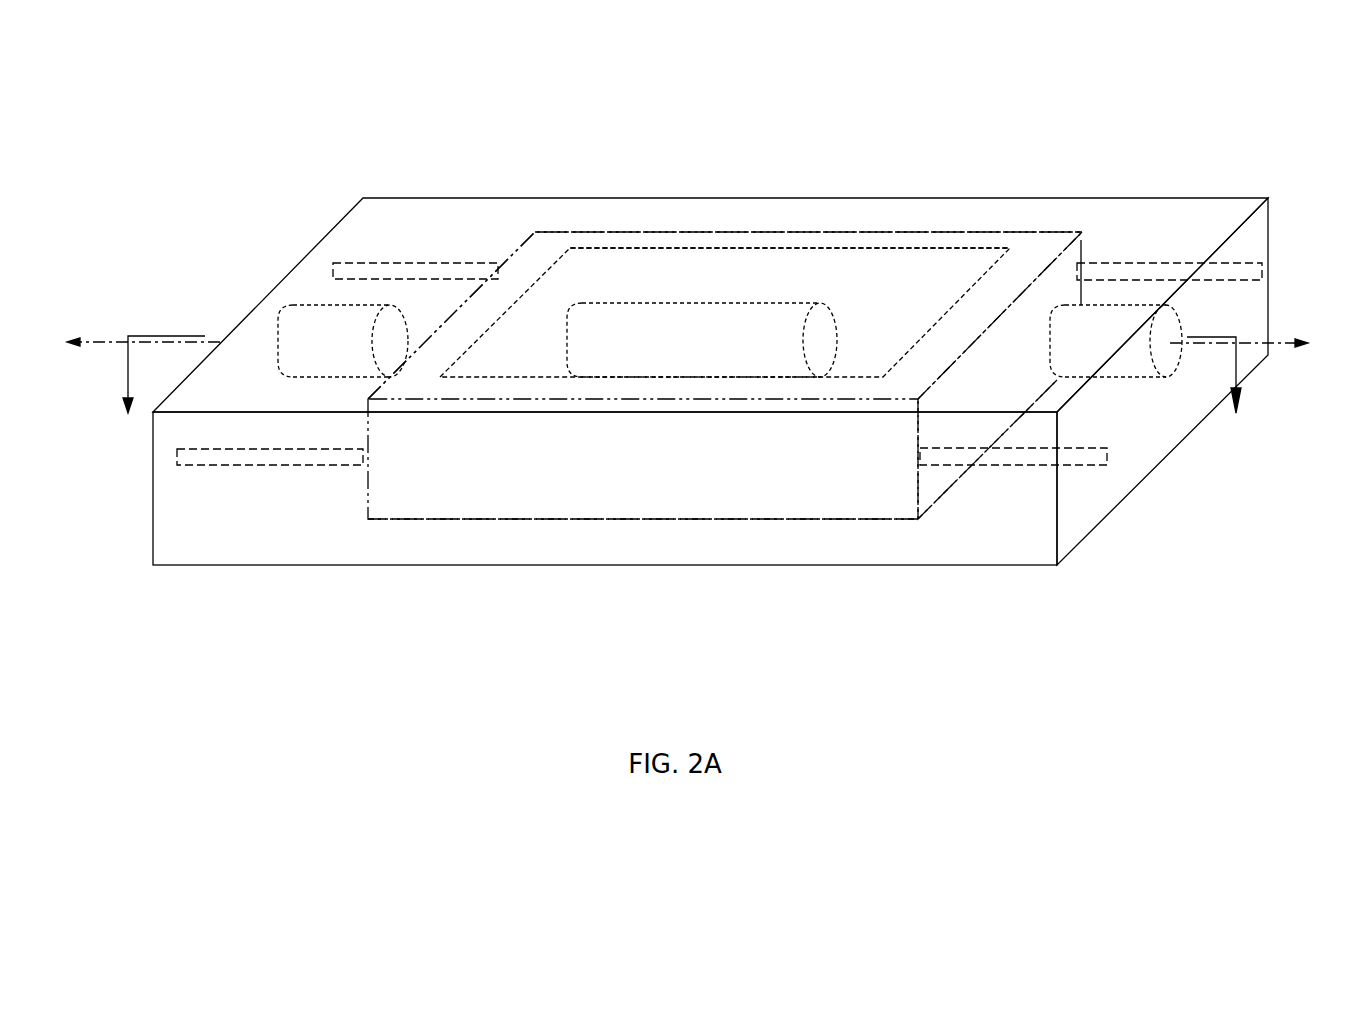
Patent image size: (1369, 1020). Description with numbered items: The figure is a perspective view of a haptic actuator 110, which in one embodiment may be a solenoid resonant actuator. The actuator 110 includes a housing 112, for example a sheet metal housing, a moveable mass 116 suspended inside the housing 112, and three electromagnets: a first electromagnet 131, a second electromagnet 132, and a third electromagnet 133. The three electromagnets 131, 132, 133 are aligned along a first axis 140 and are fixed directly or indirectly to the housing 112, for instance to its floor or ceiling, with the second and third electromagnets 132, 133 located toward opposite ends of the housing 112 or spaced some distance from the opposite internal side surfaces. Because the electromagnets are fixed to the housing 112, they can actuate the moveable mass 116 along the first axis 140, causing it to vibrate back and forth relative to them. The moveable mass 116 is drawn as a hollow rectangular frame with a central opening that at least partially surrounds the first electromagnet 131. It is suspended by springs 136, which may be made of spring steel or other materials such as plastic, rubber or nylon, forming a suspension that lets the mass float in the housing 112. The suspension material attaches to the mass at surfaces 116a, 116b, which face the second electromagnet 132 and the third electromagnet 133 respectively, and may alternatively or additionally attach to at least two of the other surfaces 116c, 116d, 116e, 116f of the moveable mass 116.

The haptic actuator 110 is at (300, 193).
The housing 112 is at (437, 215).
The moveable mass 116 is at (938, 237).
The surface of moveable mass 116a is at (503, 258).
The surface of moveable mass 116b is at (1058, 285).
The surface of moveable mass 116c is at (620, 233).
The surface of moveable mass 116d is at (550, 498).
The surface of moveable mass 116e is at (557, 245).
The surface of moveable mass 116f is at (815, 519).
The first electromagnet 131 is at (747, 322).
The second electromagnet 132 is at (333, 360).
The third electromagnet 133 is at (1177, 322).
The springs 136 is at (380, 265).
The first axis 140 is at (112, 337).